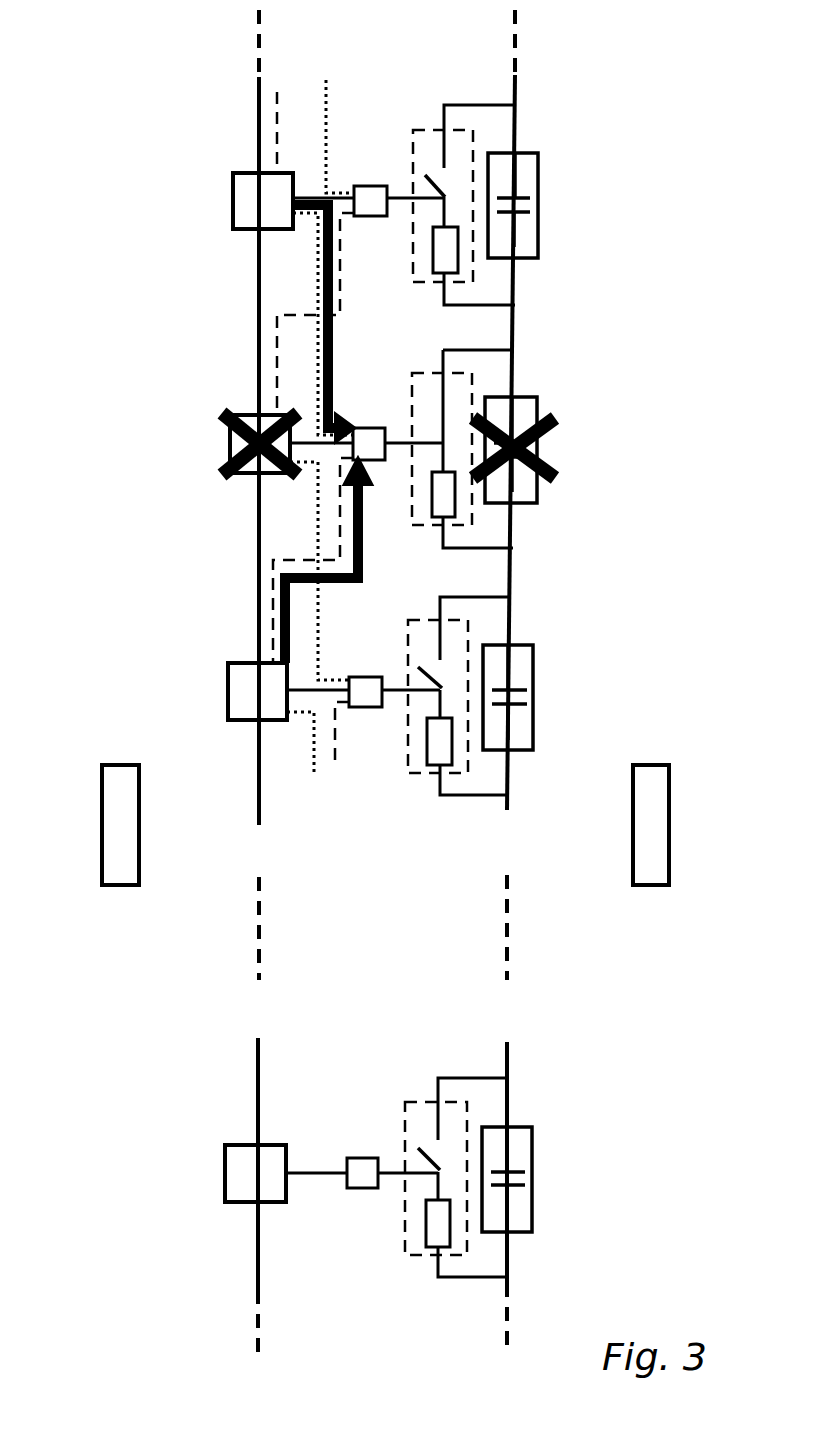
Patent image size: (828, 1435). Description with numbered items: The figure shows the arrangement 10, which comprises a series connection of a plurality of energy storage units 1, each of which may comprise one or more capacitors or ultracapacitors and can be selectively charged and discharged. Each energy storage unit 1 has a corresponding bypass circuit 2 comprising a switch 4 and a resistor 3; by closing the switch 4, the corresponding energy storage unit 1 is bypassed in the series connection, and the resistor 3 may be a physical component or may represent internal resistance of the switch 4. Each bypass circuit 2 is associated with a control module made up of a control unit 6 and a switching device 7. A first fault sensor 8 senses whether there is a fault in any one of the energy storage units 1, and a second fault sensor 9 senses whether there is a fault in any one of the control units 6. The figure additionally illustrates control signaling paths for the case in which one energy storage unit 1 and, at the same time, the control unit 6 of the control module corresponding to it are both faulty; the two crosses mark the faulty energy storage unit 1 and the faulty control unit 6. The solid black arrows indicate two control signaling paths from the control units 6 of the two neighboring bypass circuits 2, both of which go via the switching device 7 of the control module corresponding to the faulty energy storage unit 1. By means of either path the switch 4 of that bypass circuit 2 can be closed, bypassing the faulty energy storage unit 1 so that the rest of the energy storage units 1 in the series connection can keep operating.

The energy storage unit 1 is at (540, 165).
The bypass circuit 2 is at (475, 145).
The resistor 3 is at (443, 278).
The switch 4 is at (430, 162).
The control unit 6 is at (233, 207).
The switching device 7 is at (368, 186).
The first fault sensor 8 is at (645, 887).
The second fault sensor 9 is at (115, 887).
The arrangement 10 is at (118, 118).